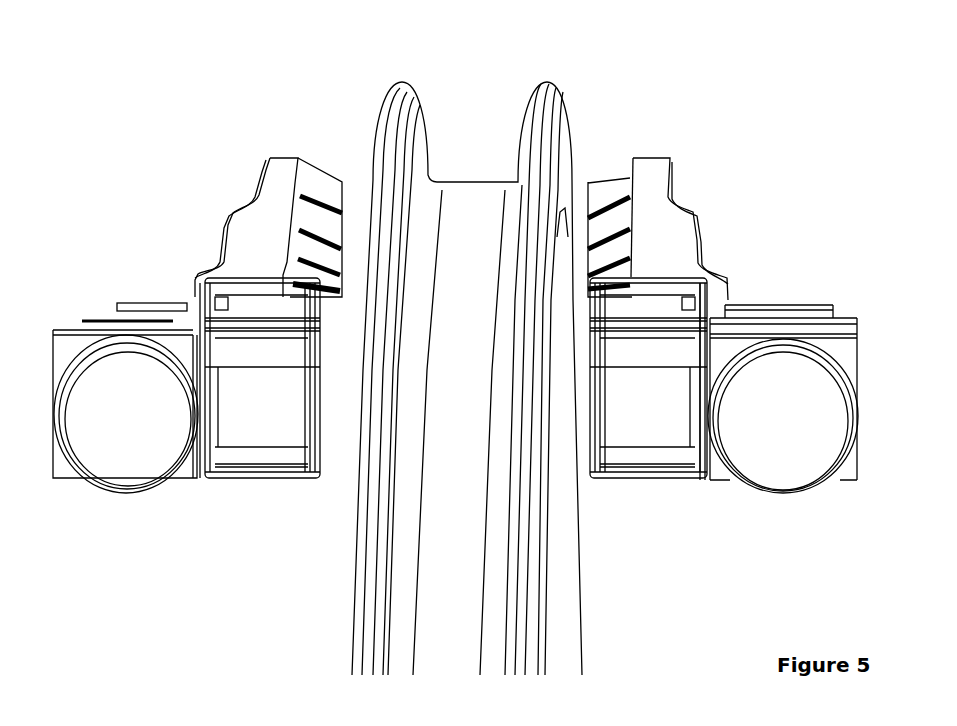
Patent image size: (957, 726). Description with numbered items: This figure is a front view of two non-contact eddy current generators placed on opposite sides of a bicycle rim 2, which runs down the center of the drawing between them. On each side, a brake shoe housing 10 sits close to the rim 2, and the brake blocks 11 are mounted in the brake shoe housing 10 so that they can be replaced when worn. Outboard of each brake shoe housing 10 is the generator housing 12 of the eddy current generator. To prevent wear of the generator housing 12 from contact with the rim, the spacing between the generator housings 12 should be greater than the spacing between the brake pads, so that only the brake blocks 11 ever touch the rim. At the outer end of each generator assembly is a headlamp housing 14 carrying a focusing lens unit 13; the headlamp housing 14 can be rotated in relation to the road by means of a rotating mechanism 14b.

The bicycle rim 2 is at (563, 90).
The brake shoe housing 10 is at (264, 157).
The brake blocks 11 is at (345, 188).
The generator housing 12 is at (238, 478).
The focusing lens unit 13 is at (92, 310).
The headlamp housing 14 is at (160, 300).
The rotating mechanism 14b is at (728, 297).